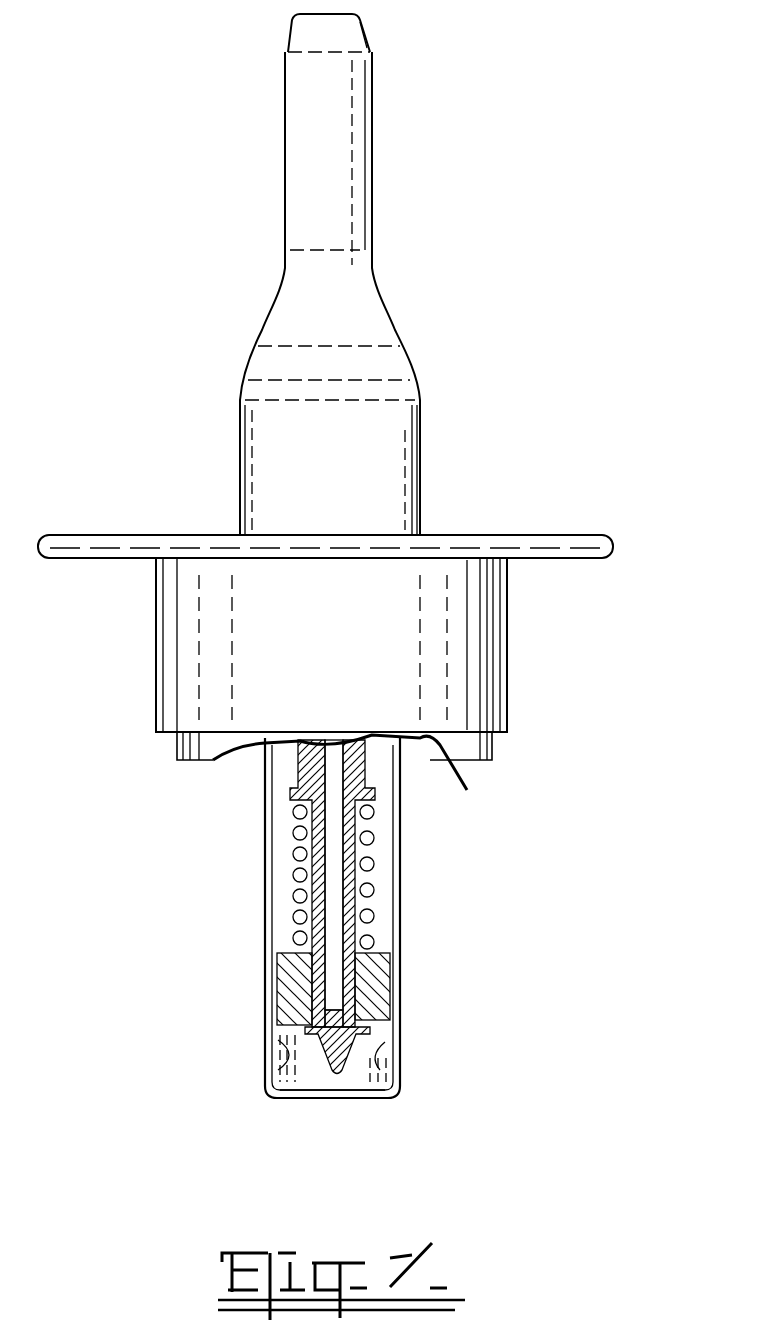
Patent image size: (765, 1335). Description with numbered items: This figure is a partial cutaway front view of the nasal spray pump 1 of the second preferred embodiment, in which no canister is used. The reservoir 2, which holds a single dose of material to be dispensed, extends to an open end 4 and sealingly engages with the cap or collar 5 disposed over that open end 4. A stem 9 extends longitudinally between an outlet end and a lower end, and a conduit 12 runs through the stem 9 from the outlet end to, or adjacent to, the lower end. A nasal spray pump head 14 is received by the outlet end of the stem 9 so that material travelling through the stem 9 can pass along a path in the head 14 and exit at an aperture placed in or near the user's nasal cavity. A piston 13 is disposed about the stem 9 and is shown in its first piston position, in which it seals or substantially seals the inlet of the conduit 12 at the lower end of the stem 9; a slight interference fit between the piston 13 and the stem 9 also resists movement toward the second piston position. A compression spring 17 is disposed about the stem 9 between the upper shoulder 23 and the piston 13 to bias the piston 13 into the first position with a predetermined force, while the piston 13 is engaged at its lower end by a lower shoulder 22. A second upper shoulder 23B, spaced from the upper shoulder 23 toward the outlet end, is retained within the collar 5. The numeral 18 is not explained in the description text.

The nasal spray pump 1 is at (575, 293).
The reservoir 2 is at (400, 934).
The open end 4 is at (372, 1098).
The cap 5 is at (178, 752).
The stem 9 is at (295, 838).
The conduit 12 is at (337, 878).
The piston 13 is at (290, 983).
The nasal spray pump head 14 is at (283, 272).
The compression spring 17 is at (372, 866).
The chamber 18 is at (290, 1042).
The lower shoulder 22 is at (386, 1068).
The upper shoulder 23 is at (383, 797).
The second upper shoulder 23B is at (380, 746).